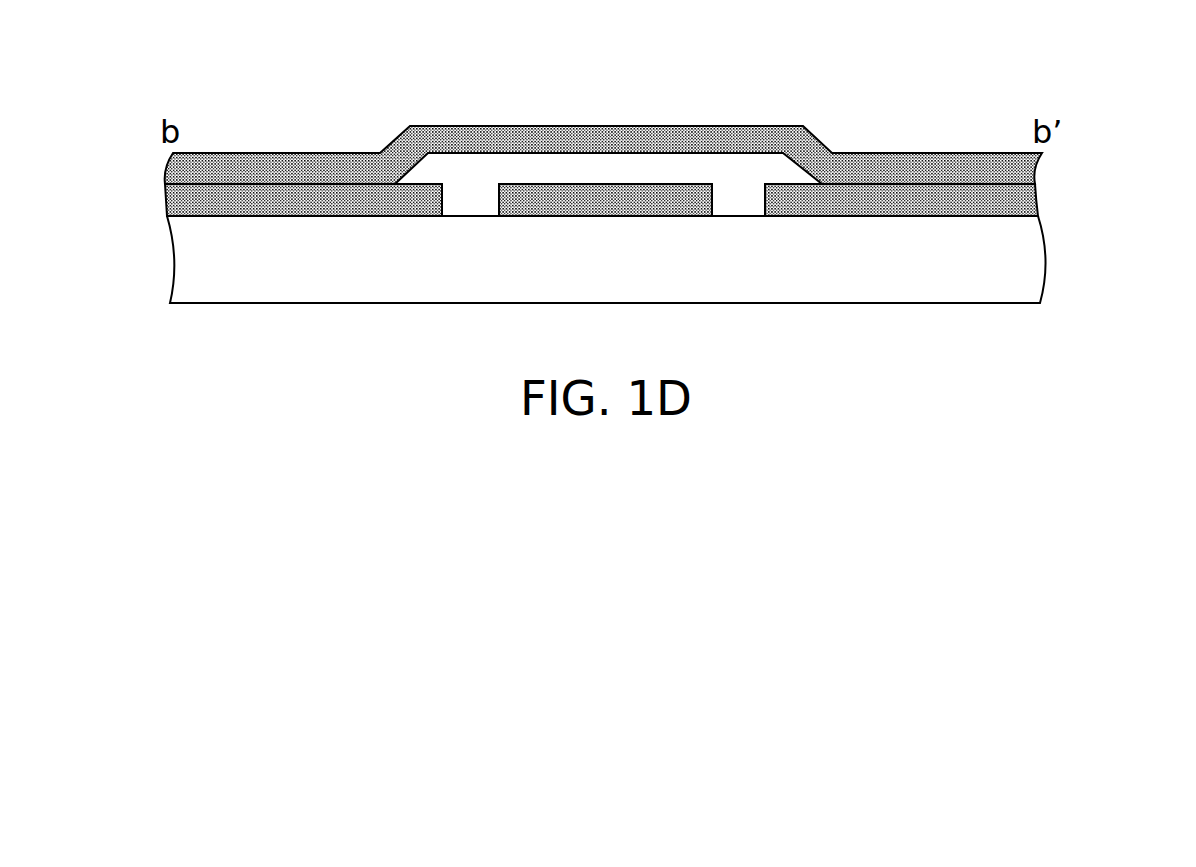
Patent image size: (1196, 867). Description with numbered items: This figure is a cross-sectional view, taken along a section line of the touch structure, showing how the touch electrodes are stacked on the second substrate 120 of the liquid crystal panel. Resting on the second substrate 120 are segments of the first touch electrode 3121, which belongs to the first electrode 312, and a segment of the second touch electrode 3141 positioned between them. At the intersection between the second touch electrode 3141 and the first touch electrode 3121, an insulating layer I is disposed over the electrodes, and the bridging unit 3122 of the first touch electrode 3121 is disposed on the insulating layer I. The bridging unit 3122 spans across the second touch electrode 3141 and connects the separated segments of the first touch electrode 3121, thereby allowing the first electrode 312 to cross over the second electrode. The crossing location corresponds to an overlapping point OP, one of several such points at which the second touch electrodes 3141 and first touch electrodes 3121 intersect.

The second substrate 120 is at (1038, 265).
The first electrode 312 is at (670, 175).
The first touch electrode 3121 is at (1035, 200).
The bridging unit 3122 is at (1035, 168).
The second touch electrode 3141 is at (600, 198).
The overlapping point OP is at (688, 117).
The insulating layer I is at (737, 168).